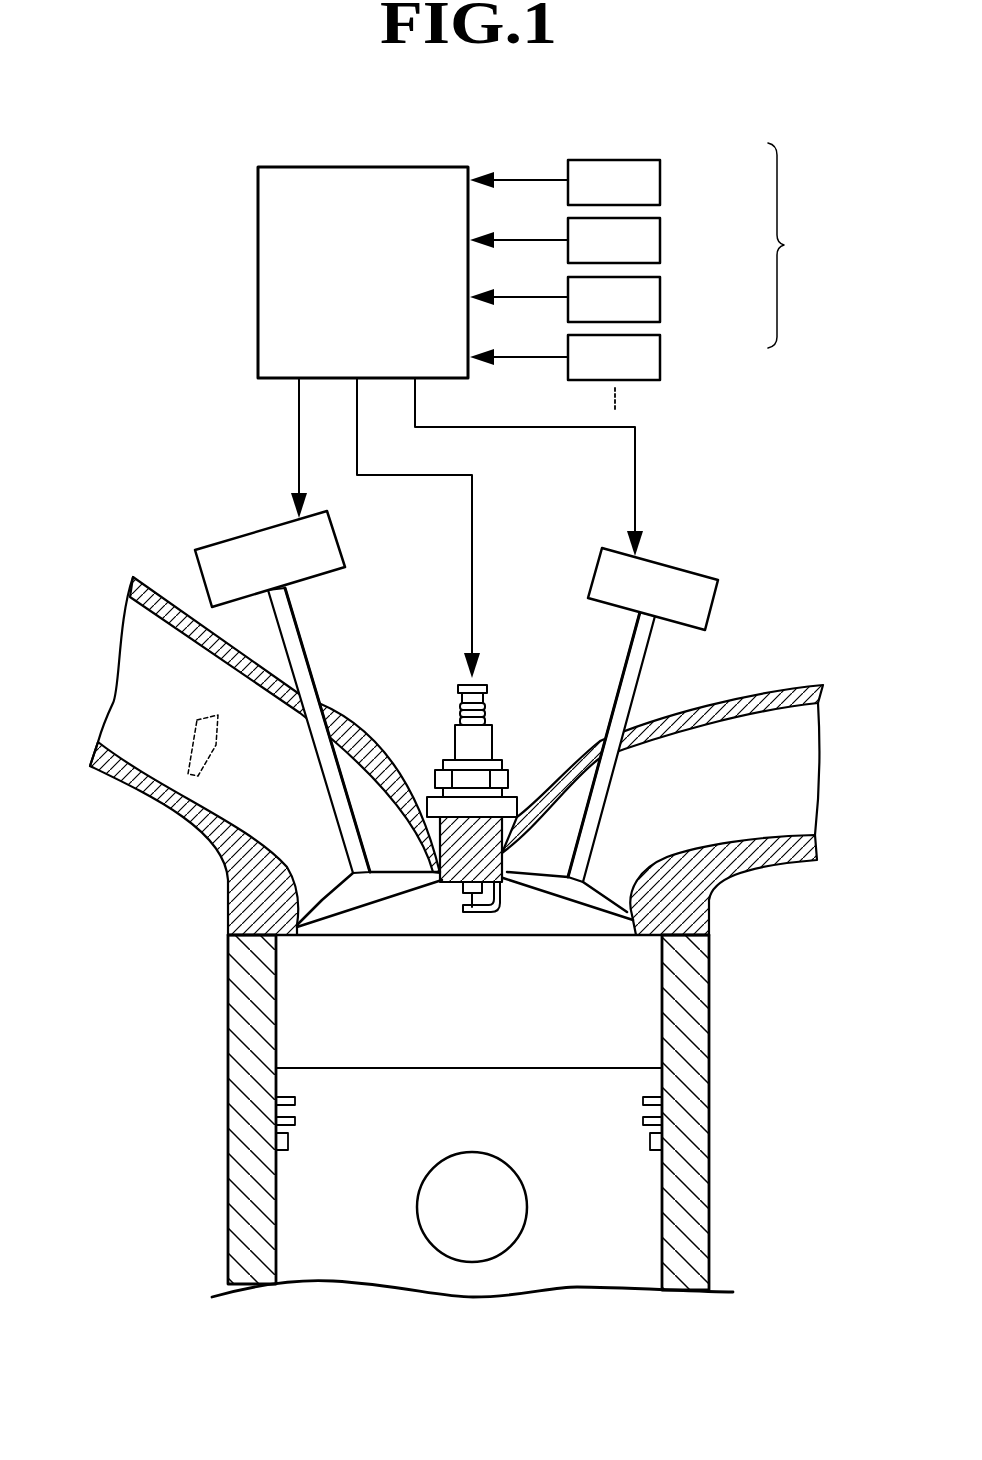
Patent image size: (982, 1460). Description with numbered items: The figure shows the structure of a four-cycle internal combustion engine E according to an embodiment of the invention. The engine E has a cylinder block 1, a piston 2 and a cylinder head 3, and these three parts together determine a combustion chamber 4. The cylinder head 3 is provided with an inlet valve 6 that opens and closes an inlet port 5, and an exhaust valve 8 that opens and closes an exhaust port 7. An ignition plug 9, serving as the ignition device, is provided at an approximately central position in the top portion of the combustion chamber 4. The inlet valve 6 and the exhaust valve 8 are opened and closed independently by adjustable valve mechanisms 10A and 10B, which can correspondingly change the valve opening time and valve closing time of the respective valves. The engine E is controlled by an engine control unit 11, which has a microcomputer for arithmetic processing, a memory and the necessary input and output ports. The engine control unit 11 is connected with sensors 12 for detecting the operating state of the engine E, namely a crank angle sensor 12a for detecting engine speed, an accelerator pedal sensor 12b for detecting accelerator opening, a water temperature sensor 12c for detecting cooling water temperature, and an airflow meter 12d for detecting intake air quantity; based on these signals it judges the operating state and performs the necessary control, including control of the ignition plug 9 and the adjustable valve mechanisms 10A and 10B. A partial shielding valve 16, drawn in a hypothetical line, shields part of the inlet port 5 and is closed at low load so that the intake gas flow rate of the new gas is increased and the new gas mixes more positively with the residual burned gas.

The cylinder block 1 is at (243, 1048).
The piston 2 is at (543, 1075).
The cylinder head 3 is at (456, 756).
The combustion chamber 4 is at (476, 1006).
The inlet port 5 is at (158, 758).
The inlet valve 6 is at (358, 900).
The exhaust port 7 is at (737, 835).
The exhaust valve 8 is at (565, 900).
The ignition plug 9 is at (492, 737).
The adjustable valve mechanism 10A is at (345, 543).
The adjustable valve mechanism 10B is at (595, 575).
The engine control unit 11 is at (365, 177).
The sensors 12 is at (796, 245).
The crank angle sensor 12a is at (661, 183).
The accelerator pedal sensor 12b is at (661, 242).
The water temperature sensor 12c is at (661, 300).
The airflow meter 12d is at (661, 360).
The partial shielding valve 16 is at (203, 713).
The engine E is at (160, 980).